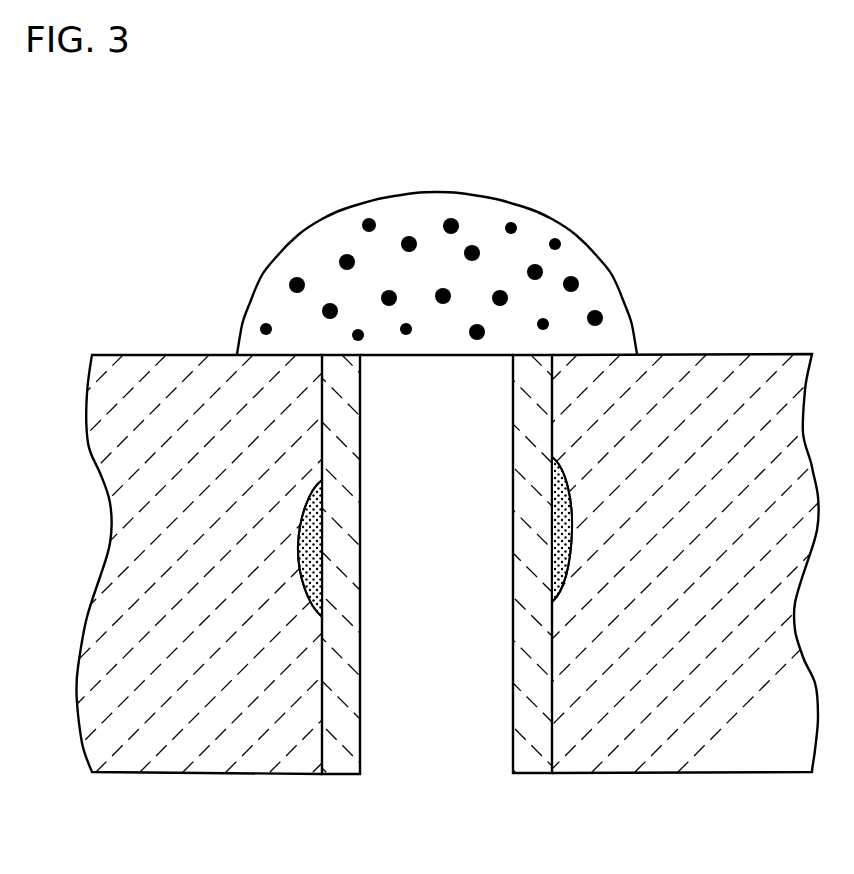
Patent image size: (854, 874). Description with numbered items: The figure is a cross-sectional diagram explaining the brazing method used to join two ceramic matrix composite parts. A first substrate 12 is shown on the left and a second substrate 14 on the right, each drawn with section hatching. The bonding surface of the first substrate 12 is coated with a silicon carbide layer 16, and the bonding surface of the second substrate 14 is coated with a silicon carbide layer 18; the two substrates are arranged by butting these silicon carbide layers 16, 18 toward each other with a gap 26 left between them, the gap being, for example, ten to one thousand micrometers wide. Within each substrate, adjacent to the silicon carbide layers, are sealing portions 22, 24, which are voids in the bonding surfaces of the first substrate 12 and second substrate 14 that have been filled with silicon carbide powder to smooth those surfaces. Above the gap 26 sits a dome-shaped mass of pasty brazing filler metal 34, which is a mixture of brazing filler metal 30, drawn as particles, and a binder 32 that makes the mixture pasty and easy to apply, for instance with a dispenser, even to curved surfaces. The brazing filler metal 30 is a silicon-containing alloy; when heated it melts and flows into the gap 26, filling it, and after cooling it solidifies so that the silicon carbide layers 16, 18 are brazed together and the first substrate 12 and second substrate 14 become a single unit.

The first substrate 12 is at (208, 774).
The second substrate 14 is at (690, 773).
The silicon carbide layer 16 is at (343, 774).
The silicon carbide layer 18 is at (533, 773).
The sealing portion 22 is at (308, 583).
The sealing portion 24 is at (568, 568).
The gap 26 is at (437, 702).
The brazing filler metal 30 is at (580, 282).
The binder 32 is at (450, 231).
The pasty brazing filler metal 34 is at (514, 202).